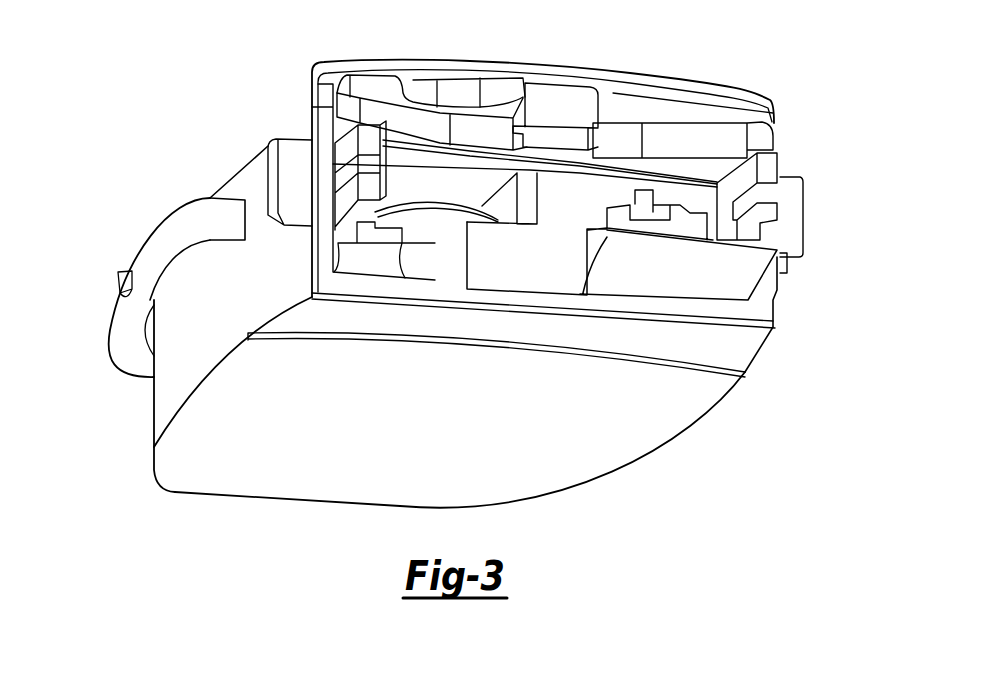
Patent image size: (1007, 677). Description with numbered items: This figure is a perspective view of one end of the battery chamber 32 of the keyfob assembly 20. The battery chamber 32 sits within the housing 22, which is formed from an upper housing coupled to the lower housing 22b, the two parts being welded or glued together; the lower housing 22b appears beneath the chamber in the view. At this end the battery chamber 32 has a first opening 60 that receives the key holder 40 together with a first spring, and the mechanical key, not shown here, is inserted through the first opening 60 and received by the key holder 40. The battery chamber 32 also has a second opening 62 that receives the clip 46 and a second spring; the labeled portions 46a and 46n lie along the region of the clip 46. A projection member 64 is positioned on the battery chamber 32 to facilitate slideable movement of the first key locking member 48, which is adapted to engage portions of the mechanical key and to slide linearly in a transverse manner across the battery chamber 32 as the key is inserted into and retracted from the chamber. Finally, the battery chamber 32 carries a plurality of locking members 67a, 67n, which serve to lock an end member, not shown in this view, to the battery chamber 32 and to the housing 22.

The keyfob assembly 20 is at (775, 60).
The housing 22 is at (117, 169).
The lower housing 22b is at (647, 426).
The battery chamber 32 is at (127, 398).
The key holder 40 is at (460, 216).
The clip 46 is at (560, 115).
The first ramp segment 46a is at (343, 108).
The last ramp segment 46n is at (765, 138).
The first key locking member 48 is at (698, 228).
The first opening 60 is at (473, 190).
The second opening 62 is at (327, 122).
The projection member 64 is at (740, 277).
The locking member 67a is at (338, 158).
The last bracket 67n is at (782, 194).